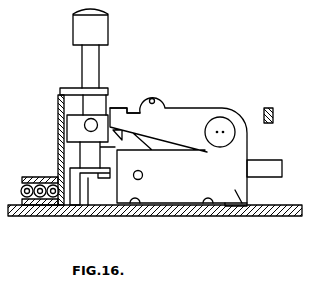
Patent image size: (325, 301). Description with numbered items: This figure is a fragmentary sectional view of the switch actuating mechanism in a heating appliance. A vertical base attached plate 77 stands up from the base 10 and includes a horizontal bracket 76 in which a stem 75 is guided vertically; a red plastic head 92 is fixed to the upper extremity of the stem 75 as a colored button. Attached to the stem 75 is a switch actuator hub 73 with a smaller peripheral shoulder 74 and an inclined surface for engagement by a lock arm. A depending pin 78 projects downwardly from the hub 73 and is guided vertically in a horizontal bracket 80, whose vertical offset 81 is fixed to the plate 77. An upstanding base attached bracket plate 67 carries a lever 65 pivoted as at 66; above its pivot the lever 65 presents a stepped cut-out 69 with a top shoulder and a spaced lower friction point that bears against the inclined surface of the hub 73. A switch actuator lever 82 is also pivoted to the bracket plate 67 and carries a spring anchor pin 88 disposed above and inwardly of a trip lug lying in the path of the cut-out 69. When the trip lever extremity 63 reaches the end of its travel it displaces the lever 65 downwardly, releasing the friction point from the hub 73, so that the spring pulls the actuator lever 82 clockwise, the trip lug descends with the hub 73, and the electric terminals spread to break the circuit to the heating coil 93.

The base plate 10 is at (290, 216).
The trip lever extremity 63 is at (273, 110).
The lever 65 is at (277, 167).
The pivot 66 is at (143, 175).
The bracket plate 67 is at (255, 217).
The stepped cut-out 69 is at (125, 108).
The switch actuator hub 73 is at (77, 128).
The peripheral shoulder 74 is at (82, 100).
The stem 75 is at (85, 78).
The horizontal bracket 76 is at (101, 90).
The vertical base attached plate 77 is at (52, 138).
The depending pin 78 is at (88, 205).
The horizontal bracket 80 is at (78, 172).
The vertical offset 81 is at (63, 216).
The switch actuator lever 82 is at (182, 119).
The spring anchor pin 88 is at (163, 97).
The red plastic head 92 is at (98, 24).
The heating coil 93 is at (227, 123).